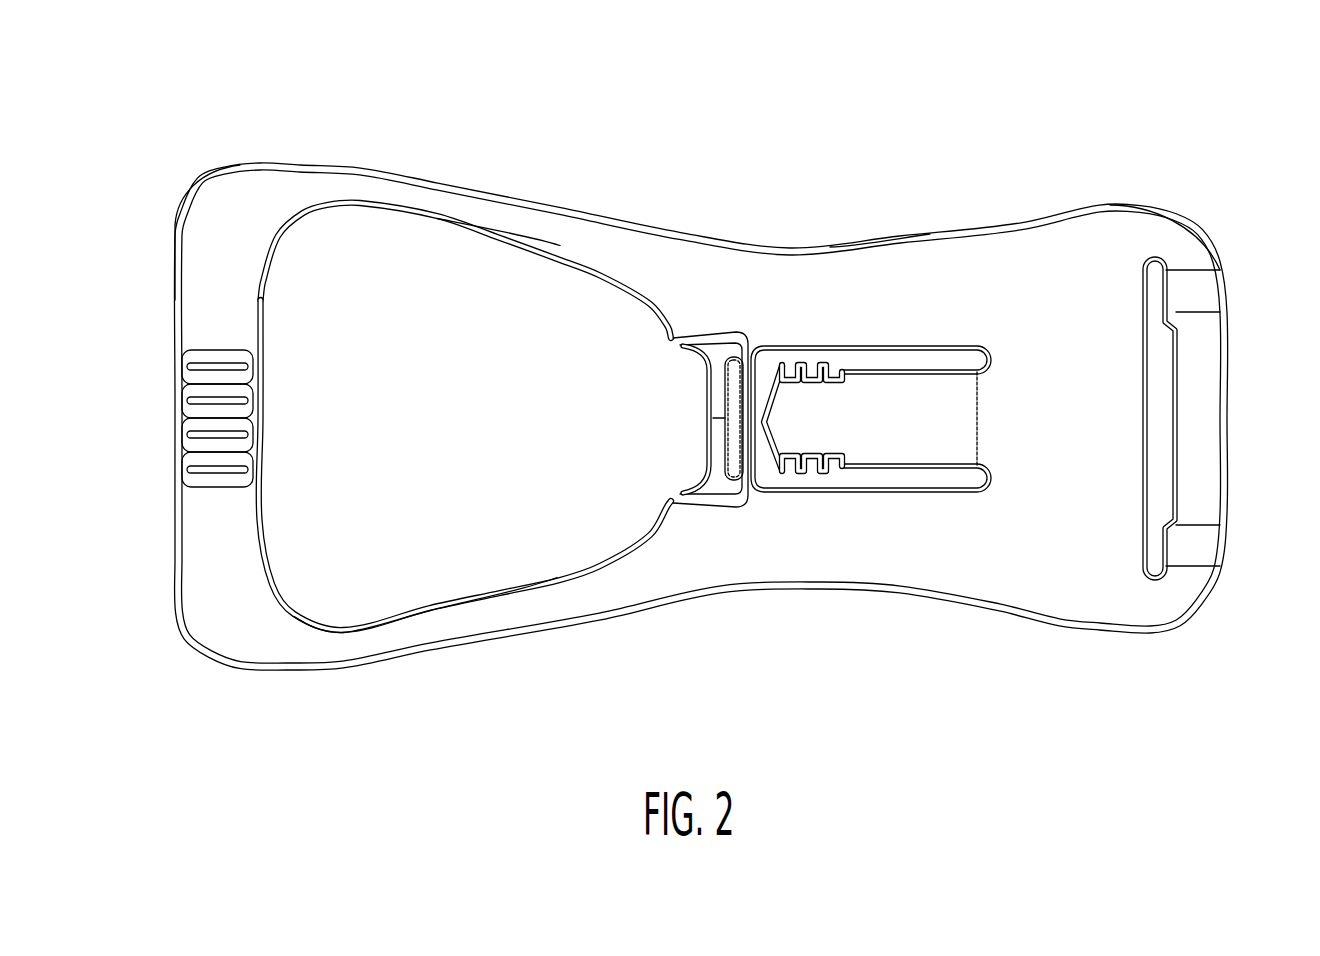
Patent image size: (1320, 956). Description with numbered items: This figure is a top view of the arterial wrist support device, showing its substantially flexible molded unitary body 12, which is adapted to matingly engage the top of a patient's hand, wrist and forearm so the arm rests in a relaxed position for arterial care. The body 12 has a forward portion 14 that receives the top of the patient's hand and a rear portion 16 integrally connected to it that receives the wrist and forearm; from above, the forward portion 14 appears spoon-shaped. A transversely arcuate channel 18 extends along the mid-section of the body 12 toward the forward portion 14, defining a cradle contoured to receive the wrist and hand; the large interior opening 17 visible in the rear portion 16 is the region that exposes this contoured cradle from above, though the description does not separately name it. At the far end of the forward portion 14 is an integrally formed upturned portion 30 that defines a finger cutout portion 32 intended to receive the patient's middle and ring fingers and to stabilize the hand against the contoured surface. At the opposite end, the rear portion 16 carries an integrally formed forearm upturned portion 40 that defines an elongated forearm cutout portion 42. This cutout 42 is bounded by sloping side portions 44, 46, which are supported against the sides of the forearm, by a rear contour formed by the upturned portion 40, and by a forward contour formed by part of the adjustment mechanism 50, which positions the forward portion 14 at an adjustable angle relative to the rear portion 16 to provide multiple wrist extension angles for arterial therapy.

The molded unitary body 12 is at (740, 244).
The forward portion 14 is at (1180, 243).
The rear portion 16 is at (205, 228).
The central opening 17 is at (445, 243).
The transversely arcuate channel 18 is at (873, 273).
The upturned portion 30 is at (1213, 382).
The finger cutout portion 32 is at (1165, 393).
The forearm upturned portion 40 is at (207, 612).
The forearm cutout portion 42 is at (350, 590).
The sloping side portion 44 is at (512, 613).
The sloping side portion 46 is at (512, 223).
The adjustment mechanism 50 is at (818, 367).